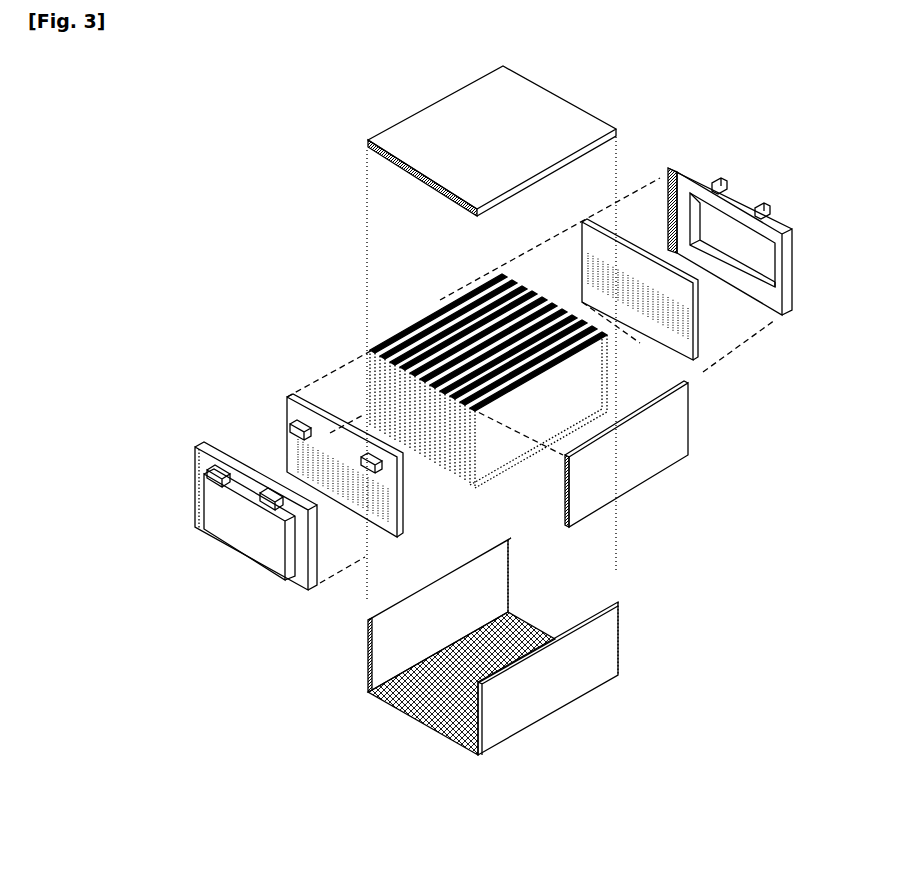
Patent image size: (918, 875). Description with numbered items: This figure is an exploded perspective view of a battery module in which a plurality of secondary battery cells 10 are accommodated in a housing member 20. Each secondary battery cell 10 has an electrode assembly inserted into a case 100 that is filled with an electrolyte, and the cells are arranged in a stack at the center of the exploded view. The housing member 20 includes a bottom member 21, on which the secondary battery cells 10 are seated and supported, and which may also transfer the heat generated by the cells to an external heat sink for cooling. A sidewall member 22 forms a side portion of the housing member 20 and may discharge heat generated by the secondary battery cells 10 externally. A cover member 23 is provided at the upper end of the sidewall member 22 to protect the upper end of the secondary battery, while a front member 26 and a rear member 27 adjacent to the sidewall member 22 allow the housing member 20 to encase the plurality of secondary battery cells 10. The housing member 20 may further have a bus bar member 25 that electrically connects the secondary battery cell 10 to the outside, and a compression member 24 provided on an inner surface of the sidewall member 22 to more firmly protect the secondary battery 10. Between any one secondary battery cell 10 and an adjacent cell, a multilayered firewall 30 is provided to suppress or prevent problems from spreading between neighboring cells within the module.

The case 100 is at (227, 131).
The secondary battery cell 10 is at (573, 405).
The housing member 20 is at (156, 254).
The bottom member 21 is at (397, 710).
The sidewall member 22 is at (367, 647).
The cover member 23 is at (372, 139).
The compression member 24 is at (560, 492).
The bus bar member 25 is at (288, 463).
The front member 26 is at (203, 507).
The rear member 27 is at (660, 207).
The multilayered firewall 30 is at (450, 317).